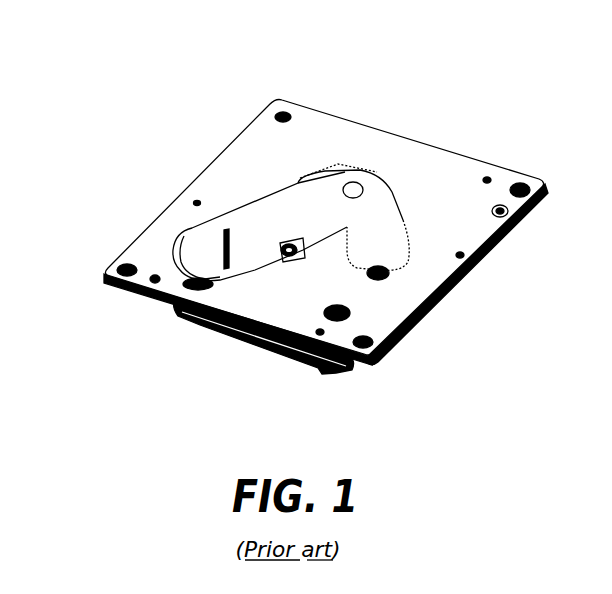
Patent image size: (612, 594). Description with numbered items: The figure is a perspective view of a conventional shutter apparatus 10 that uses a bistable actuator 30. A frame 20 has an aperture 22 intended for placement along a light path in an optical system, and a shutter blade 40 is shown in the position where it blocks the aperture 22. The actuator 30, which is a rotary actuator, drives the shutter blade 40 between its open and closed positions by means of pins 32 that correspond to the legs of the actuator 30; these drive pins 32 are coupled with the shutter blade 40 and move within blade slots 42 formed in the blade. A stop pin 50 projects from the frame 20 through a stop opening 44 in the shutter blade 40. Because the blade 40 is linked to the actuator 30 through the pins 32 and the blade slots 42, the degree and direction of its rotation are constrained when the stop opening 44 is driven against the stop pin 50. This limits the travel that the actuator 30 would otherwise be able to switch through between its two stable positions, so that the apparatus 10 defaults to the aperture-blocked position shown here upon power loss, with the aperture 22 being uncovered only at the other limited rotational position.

The shutter apparatus 10 is at (291, 219).
The frame 20 is at (262, 150).
The aperture 22 is at (347, 190).
The bistable actuator 30 is at (197, 338).
The pins 32 is at (205, 228).
The shutter blade 40 is at (289, 271).
The blade slots 42 is at (233, 282).
The stop opening 44 is at (296, 260).
The stop pin 50 is at (296, 246).